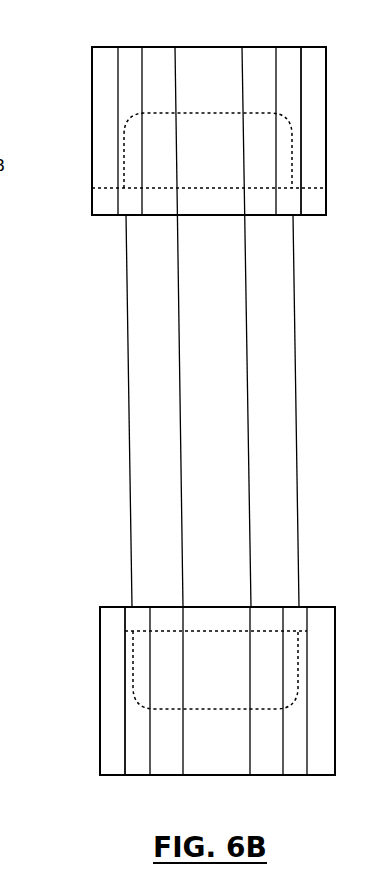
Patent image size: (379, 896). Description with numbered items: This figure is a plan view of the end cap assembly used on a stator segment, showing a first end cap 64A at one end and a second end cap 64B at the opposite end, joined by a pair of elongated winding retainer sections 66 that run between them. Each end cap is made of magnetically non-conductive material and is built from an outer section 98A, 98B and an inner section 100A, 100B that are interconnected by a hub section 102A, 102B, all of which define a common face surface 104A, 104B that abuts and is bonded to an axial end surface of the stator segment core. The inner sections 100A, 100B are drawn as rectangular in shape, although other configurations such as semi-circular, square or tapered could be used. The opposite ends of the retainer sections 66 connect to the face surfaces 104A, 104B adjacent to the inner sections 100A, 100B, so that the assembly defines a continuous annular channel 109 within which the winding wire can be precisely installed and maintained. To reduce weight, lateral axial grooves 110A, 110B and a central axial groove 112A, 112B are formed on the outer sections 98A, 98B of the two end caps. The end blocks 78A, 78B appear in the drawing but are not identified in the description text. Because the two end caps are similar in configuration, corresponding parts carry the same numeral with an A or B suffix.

The first end cap 64A is at (72, 73).
The second end cap 64B is at (82, 733).
The winding retainer sections 66 is at (158, 329).
The first end block 78A is at (107, 50).
The second end block 78B is at (267, 777).
The outer section 98A is at (305, 89).
The outer section 98B is at (117, 703).
The inner section 100A is at (199, 115).
The inner section 100B is at (133, 668).
The hub section 102A is at (235, 200).
The hub section 102B is at (191, 617).
The face surface 104A is at (303, 215).
The face surface 104B is at (309, 605).
The lateral axial grooves 110A is at (128, 90).
The lateral axial grooves 110B is at (133, 750).
The central axial groove 112A is at (191, 106).
The central axial groove 112B is at (199, 750).
The continuous annular channel 109 is at (17, 208).